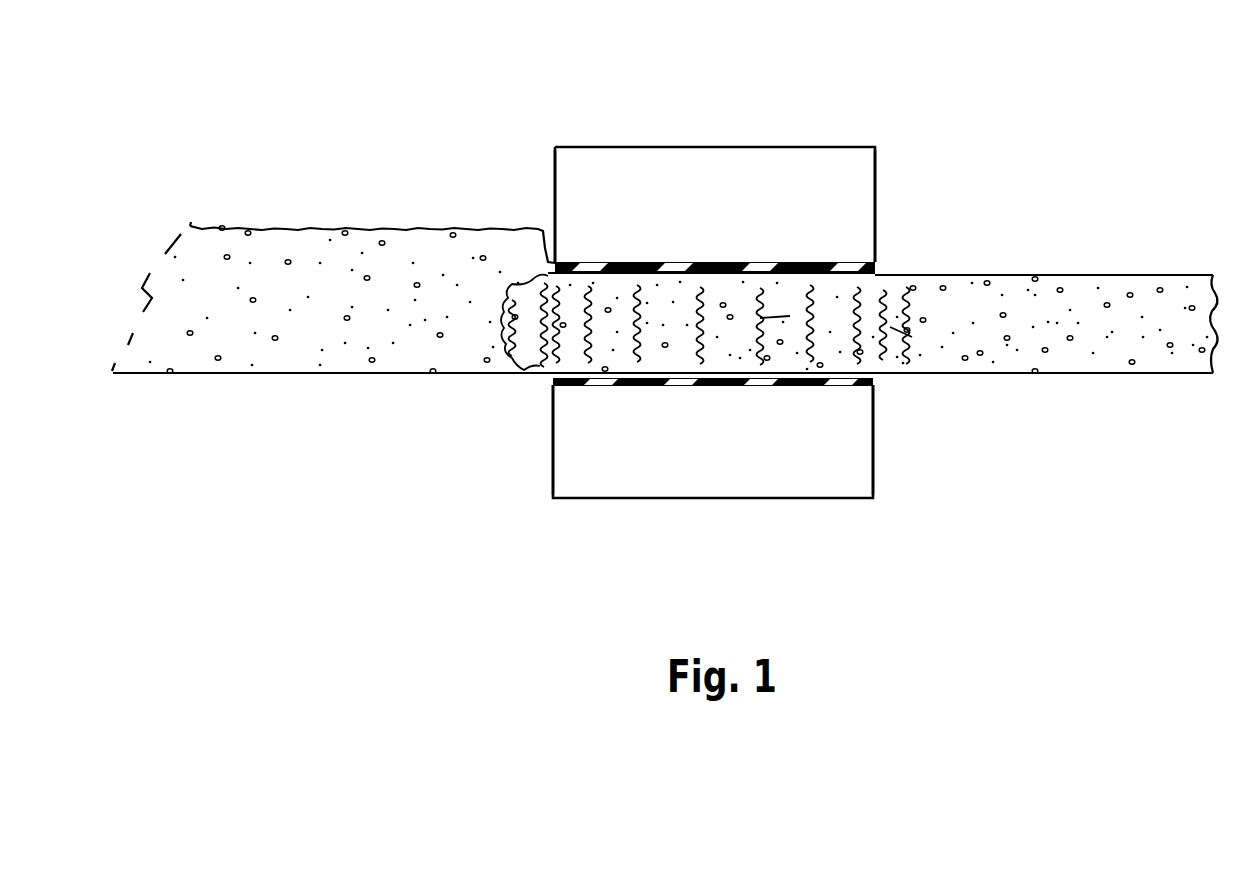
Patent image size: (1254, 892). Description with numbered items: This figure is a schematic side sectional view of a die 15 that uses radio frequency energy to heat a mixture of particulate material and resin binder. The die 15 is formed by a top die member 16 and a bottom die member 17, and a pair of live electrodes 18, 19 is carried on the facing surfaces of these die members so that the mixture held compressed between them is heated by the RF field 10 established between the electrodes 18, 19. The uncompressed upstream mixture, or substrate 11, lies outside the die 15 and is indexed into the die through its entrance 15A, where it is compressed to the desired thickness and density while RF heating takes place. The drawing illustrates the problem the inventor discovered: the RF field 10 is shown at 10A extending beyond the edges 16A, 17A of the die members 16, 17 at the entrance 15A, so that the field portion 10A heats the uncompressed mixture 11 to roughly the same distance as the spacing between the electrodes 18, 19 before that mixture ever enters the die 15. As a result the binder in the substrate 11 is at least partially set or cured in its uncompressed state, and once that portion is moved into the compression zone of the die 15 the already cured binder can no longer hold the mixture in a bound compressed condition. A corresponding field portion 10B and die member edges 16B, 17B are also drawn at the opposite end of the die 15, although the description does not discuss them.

The RF field 10 is at (813, 332).
The RF field portion extending beyond the die edges 10A is at (522, 288).
The second region of substrate 10B is at (913, 338).
The uncompressed upstream resin binder and particulates mixture (substrate) 11 is at (326, 280).
The die 15 is at (694, 132).
The entrance of the die 15A is at (540, 342).
The top die member 16 is at (732, 136).
The edge of the top die member 16A is at (555, 218).
The upper electrode right edge 16B is at (875, 217).
The bottom die member 17 is at (710, 480).
The edge of the bottom die member 17A is at (552, 447).
The lower electrode right edge 17B is at (875, 445).
The live electrode 18 is at (685, 265).
The live electrode 19 is at (747, 387).